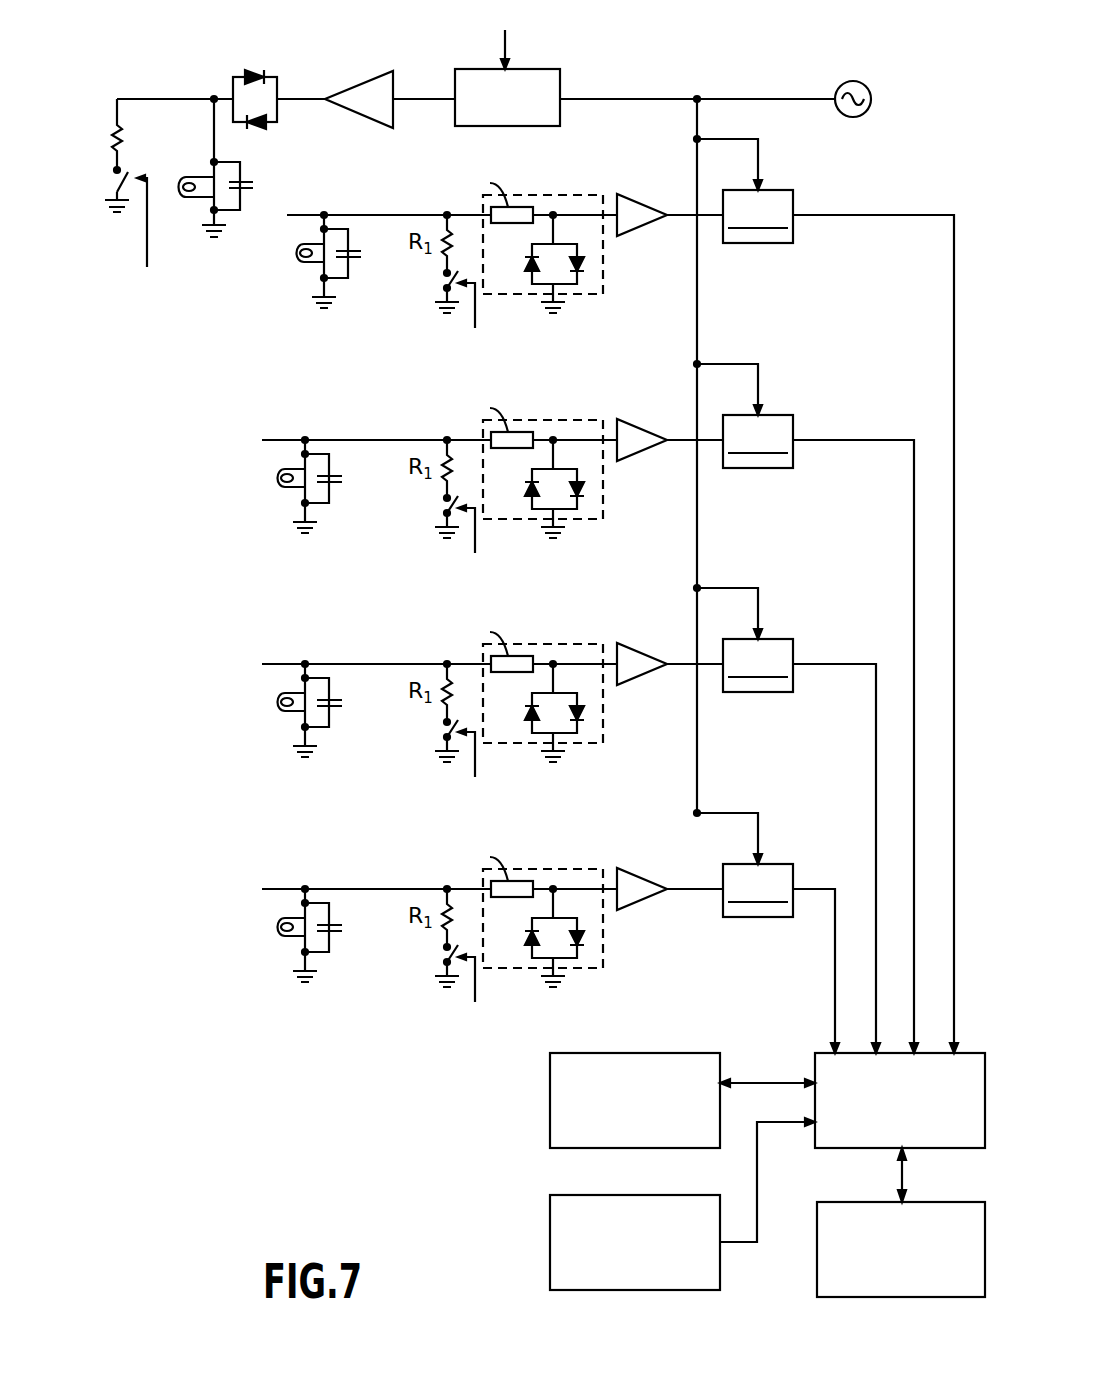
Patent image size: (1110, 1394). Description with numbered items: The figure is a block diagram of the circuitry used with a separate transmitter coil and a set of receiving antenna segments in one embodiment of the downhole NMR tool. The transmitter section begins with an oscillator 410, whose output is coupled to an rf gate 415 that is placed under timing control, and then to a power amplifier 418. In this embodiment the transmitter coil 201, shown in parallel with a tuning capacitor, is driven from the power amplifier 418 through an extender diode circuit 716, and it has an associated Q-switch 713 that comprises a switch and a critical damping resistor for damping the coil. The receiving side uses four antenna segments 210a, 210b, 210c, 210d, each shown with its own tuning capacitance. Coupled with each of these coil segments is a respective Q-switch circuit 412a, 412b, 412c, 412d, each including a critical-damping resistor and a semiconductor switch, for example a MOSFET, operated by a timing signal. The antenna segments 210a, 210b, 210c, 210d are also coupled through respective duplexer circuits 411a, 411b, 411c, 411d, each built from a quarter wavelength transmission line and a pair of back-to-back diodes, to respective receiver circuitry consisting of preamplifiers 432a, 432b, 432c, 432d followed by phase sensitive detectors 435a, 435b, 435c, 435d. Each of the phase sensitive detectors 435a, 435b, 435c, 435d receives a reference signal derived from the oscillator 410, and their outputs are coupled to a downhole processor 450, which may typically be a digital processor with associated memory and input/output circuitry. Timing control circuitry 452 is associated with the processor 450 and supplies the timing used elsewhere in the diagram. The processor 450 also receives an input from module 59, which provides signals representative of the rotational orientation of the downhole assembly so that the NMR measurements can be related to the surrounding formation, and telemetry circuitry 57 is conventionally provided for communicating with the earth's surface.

The extender diode circuit 716 is at (232, 69).
The power amplifier 418 is at (350, 78).
The rf gate 415 is at (478, 68).
The oscillator 410 is at (862, 82).
The Q-switch 713 is at (140, 137).
The transmitter coil 201 is at (183, 195).
The antenna segment 210a is at (321, 264).
The antenna segment 210b is at (280, 486).
The antenna segment 210c is at (299, 713).
The antenna segment 210d is at (299, 938).
The Q-switch circuit 412a is at (443, 314).
The Q-switch circuit 412b is at (430, 506).
The Q-switch circuit 412c is at (443, 763).
The Q-switch circuit 412d is at (443, 988).
The duplexer circuit 411a is at (539, 232).
The duplexer circuit 411b is at (530, 420).
The duplexer circuit 411c is at (539, 681).
The duplexer circuit 411d is at (539, 906).
The preamplifier 432a is at (652, 194).
The preamplifier 432b is at (647, 430).
The preamplifier 432c is at (652, 643).
The preamplifier 432d is at (653, 868).
The phase sensitive detector 435a is at (826, 594).
The phase sensitive detector 435b is at (806, 707).
The phase sensitive detector 435c is at (787, 819).
The phase sensitive detector 435d is at (766, 931).
The downhole processor 450 is at (828, 1050).
The timing control circuitry 452 is at (550, 1098).
The module 59 is at (550, 1242).
The telemetry circuitry 57 is at (817, 1290).